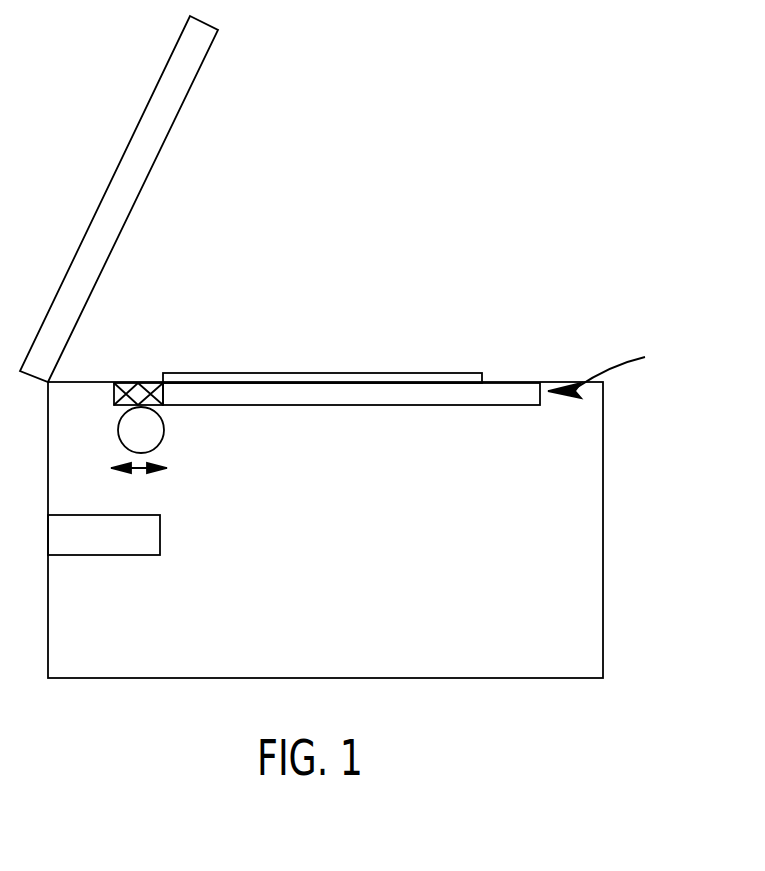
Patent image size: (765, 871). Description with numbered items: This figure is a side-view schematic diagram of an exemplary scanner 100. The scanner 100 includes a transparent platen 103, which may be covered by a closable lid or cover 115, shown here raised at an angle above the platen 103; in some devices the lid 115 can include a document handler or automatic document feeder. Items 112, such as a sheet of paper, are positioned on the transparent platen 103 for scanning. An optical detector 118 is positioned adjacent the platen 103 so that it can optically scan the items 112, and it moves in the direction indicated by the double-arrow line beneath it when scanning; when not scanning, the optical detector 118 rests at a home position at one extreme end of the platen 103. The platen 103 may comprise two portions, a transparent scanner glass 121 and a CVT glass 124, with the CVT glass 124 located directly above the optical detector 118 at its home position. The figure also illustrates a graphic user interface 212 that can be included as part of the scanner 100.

The scanner 100 is at (603, 512).
The lid 115 is at (195, 77).
The items 112 is at (322, 373).
The transparent scanner glass 121 is at (322, 405).
The CVT glass 124 is at (140, 383).
The optical detector 118 is at (163, 432).
The transparent platen 103 is at (612, 372).
The graphic user interface 212 is at (128, 555).